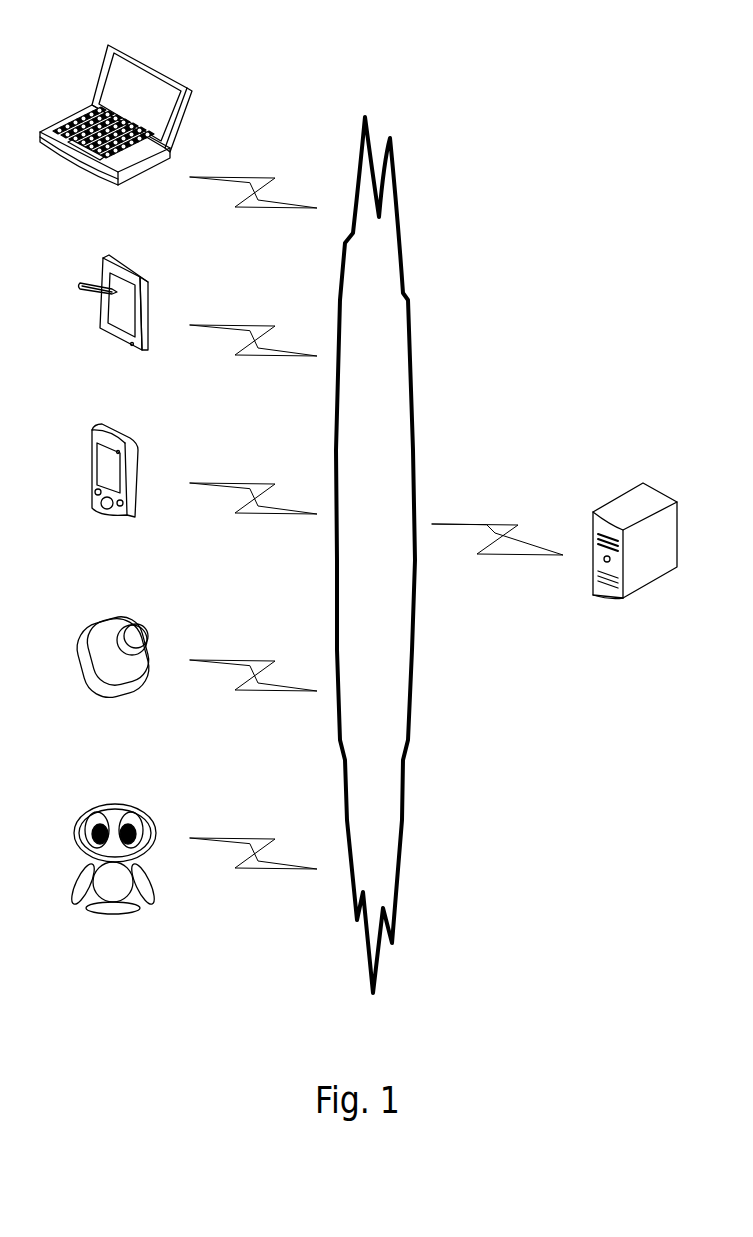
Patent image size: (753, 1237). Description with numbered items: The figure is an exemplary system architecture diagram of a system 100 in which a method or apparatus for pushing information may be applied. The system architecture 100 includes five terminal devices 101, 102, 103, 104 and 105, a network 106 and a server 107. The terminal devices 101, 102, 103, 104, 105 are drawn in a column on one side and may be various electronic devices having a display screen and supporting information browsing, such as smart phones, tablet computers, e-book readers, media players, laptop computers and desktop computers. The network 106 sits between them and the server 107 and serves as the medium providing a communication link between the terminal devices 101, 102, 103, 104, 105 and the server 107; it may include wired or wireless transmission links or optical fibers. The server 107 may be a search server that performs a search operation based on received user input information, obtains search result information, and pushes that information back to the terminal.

The system architecture 100 is at (607, 35).
The terminal device 101 is at (112, 879).
The terminal device 102 is at (112, 676).
The terminal device 103 is at (115, 488).
The terminal device 104 is at (114, 320).
The terminal device 105 is at (116, 134).
The network 106 is at (375, 555).
The server 107 is at (635, 557).